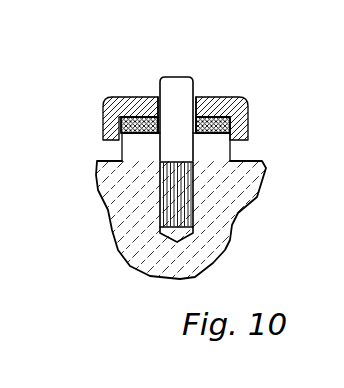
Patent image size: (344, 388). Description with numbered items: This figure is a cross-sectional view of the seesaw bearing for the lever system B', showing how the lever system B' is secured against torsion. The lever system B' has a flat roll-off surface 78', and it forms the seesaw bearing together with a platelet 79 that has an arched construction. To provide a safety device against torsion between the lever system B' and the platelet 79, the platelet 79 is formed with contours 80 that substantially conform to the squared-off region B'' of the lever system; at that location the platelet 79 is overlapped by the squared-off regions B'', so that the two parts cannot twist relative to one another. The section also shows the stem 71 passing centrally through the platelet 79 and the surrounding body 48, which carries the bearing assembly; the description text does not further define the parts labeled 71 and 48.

The body 48 is at (125, 230).
The platelet 79 is at (118, 138).
The contours 80 is at (125, 125).
The flat roll-off surface 78' is at (175, 85).
The threaded stem 71 is at (180, 88).
The lever system B' is at (216, 79).
The squared-off region B'' is at (176, 119).